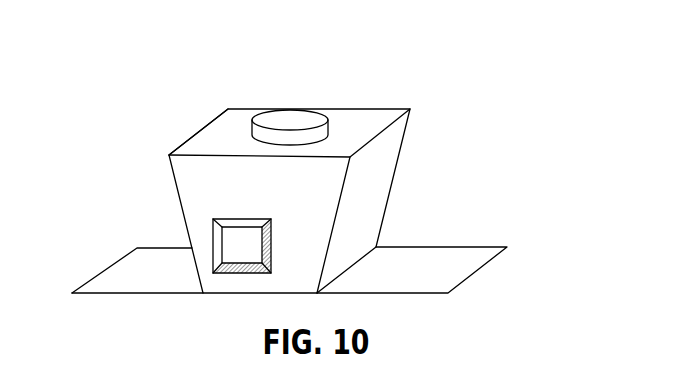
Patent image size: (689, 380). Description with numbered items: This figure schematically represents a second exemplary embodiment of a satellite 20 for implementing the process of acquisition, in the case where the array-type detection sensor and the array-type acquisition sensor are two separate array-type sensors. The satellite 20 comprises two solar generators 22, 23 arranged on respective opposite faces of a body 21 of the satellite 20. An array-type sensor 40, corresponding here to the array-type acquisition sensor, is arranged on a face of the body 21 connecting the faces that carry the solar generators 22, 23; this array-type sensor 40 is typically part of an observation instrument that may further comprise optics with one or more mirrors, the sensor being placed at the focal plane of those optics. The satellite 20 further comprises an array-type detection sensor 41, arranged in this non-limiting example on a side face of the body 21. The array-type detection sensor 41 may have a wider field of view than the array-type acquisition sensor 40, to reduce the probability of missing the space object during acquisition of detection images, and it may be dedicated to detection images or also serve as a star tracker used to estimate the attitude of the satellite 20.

The satellite 20 is at (310, 186).
The body 21 is at (328, 186).
The solar generator 22 is at (129, 273).
The solar generator 23 is at (412, 240).
The array-type sensor 40 is at (287, 120).
The array-type detection sensor 41 is at (240, 265).